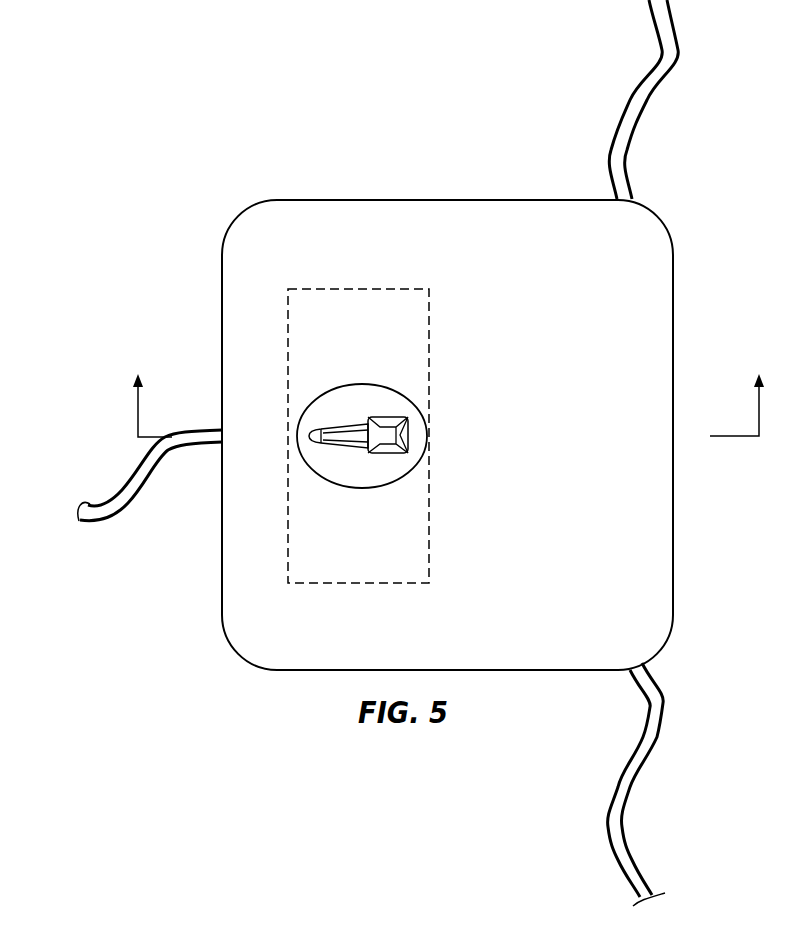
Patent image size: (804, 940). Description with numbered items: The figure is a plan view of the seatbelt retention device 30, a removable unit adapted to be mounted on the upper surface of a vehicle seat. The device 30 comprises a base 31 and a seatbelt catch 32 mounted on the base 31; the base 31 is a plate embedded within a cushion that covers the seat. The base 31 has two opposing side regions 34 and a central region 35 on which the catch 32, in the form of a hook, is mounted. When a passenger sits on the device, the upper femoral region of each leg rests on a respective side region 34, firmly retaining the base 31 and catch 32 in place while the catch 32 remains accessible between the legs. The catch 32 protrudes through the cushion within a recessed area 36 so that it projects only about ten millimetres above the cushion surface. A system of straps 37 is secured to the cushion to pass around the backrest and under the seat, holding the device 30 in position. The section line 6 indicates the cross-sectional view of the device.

The seatbelt retention device 30 is at (205, 200).
The base 31 is at (429, 289).
The seatbelt catch 32 is at (388, 487).
The side regions 34 is at (358, 324).
The central region 35 is at (360, 403).
The recessed area 36 is at (356, 440).
The straps 37 is at (640, 104).
The section line 6- 6 is at (452, 374).